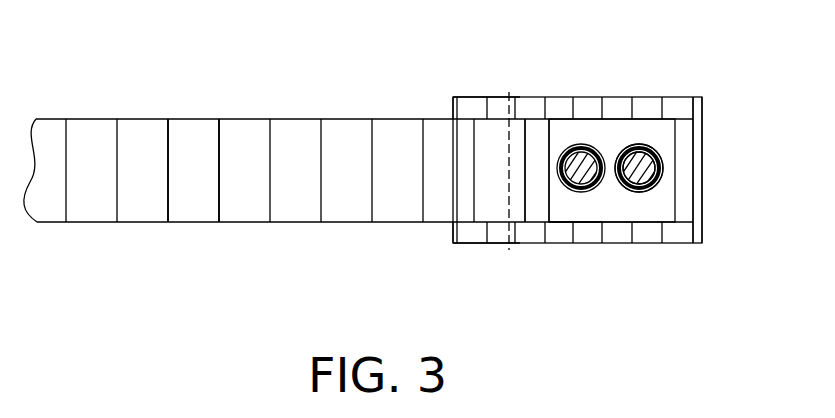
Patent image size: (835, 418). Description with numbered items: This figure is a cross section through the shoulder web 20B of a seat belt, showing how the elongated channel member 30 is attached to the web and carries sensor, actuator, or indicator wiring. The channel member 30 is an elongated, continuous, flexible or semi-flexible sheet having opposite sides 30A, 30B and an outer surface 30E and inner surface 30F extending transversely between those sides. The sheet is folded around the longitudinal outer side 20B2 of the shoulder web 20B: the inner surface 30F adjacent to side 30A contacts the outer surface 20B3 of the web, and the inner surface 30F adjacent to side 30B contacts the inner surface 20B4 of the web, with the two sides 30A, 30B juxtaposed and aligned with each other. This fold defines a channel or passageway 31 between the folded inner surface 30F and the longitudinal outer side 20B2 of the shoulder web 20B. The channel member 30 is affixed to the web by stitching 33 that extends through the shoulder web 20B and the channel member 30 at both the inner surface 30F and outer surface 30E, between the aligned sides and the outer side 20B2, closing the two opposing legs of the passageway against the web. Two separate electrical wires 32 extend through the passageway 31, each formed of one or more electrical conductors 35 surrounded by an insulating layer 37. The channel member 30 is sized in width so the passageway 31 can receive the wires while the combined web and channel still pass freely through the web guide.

The shoulder web 20B is at (93, 142).
The longitudinal outer side 20B2 is at (552, 137).
The outer surface 20B3 is at (192, 119).
The inner surface 20B4 is at (182, 223).
The elongated channel member 30 is at (531, 93).
The side of channel member 30A is at (453, 112).
The side of channel member 30B is at (453, 230).
The outer surface of channel member 30E is at (703, 227).
The inner surface of channel member 30F is at (568, 222).
The channel or passageway 31 is at (605, 132).
The electrical wires 32 is at (640, 177).
The stitching 33 is at (509, 92).
The electrical conductors 35 is at (658, 163).
The insulating layer 37 is at (667, 177).